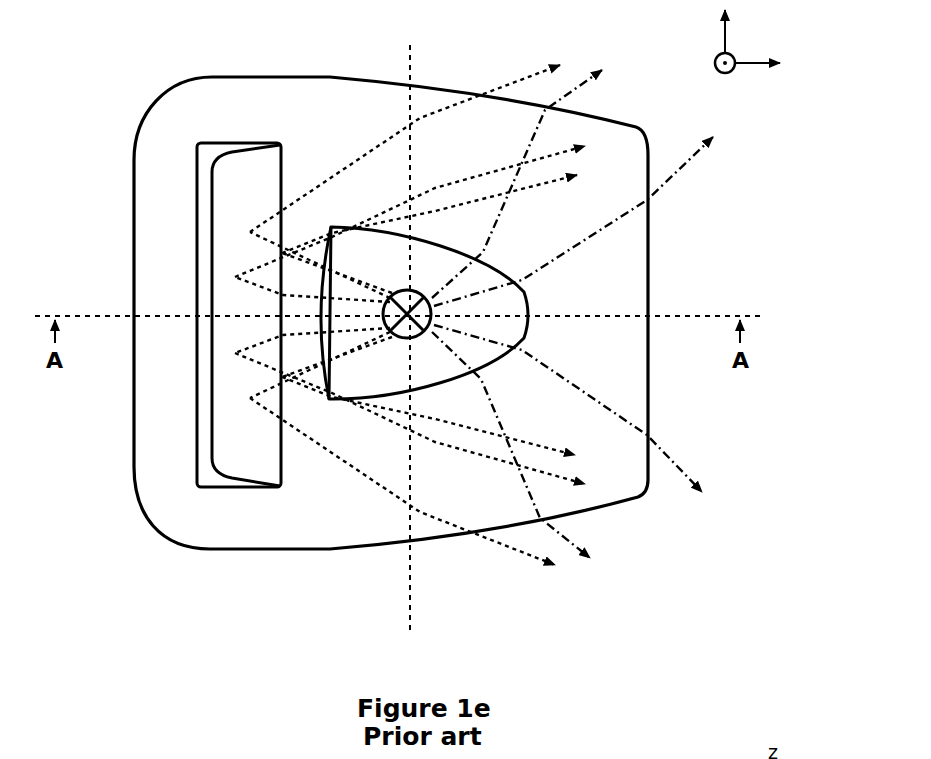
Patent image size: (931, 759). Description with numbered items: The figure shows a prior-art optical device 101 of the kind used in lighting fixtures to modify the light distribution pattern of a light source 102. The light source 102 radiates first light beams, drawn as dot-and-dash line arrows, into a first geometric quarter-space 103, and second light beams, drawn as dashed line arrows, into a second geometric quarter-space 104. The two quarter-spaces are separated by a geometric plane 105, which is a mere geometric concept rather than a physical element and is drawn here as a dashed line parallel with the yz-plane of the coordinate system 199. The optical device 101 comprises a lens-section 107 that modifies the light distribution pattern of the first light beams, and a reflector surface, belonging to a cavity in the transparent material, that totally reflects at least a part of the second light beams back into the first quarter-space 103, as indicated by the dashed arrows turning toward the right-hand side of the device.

The optical device 101 is at (187, 72).
The light source 102 is at (420, 337).
The first geometric quarter-space 103 is at (706, 267).
The second geometric quarter-space 104 is at (117, 203).
The geometric plane 105 is at (410, 597).
The lens-section 107 is at (605, 364).
The coordinate system 199 is at (779, 43).